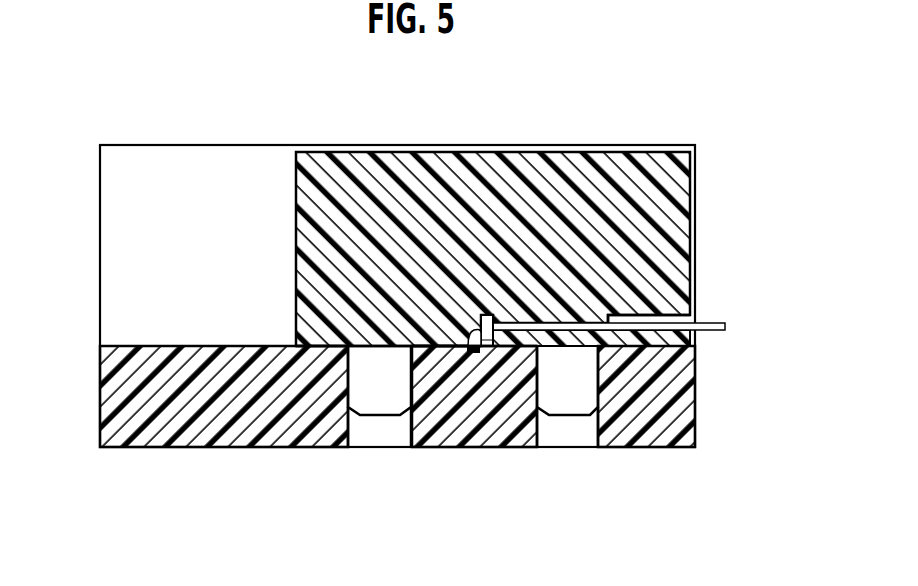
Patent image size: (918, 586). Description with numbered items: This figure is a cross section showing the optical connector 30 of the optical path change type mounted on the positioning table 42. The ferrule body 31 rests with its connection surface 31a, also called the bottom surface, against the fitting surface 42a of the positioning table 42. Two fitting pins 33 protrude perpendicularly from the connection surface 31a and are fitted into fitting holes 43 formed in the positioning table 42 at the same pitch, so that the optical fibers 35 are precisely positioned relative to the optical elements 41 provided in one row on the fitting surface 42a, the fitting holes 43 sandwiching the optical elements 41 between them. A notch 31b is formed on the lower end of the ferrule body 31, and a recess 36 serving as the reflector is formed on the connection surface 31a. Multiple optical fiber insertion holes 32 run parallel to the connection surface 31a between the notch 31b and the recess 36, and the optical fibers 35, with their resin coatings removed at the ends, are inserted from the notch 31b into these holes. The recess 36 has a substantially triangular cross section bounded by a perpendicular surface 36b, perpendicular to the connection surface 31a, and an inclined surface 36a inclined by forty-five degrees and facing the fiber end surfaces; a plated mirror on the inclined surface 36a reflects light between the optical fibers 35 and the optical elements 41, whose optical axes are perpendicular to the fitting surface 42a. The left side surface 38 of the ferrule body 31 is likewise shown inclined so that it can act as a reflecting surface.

The optical connector 30 is at (642, 86).
The ferrule body 31 is at (378, 170).
The connection surface 31a is at (322, 347).
The notch 31b is at (668, 312).
The optical fiber insertion holes 32 is at (567, 320).
The fitting pins 33 is at (395, 400).
The optical fibers 35 is at (635, 348).
The recess 36 is at (489, 316).
The inclined surface 36a is at (474, 330).
The perpendicular surface 36b is at (488, 348).
The left side surface 38 is at (297, 197).
The optical elements 41 is at (473, 354).
The positioning table 42 is at (123, 347).
The fitting surface 42a is at (448, 337).
The fitting holes 43 is at (348, 426).